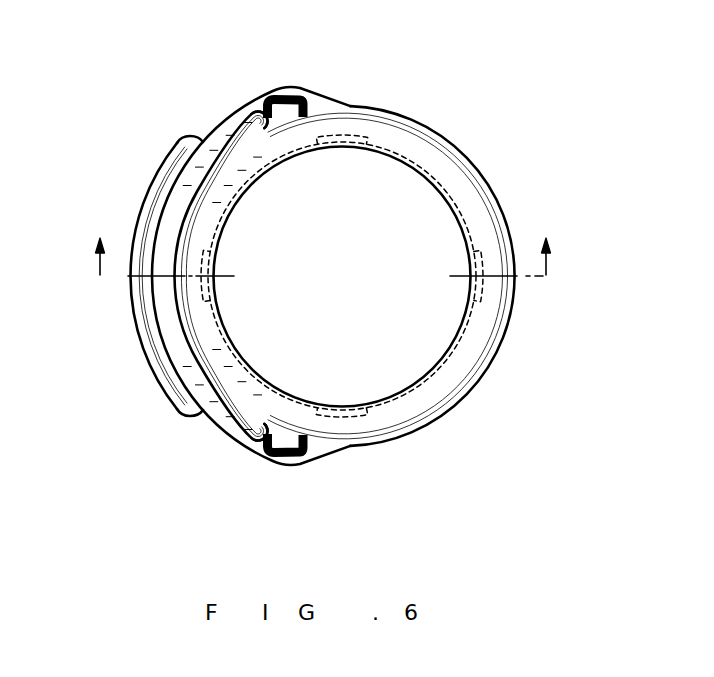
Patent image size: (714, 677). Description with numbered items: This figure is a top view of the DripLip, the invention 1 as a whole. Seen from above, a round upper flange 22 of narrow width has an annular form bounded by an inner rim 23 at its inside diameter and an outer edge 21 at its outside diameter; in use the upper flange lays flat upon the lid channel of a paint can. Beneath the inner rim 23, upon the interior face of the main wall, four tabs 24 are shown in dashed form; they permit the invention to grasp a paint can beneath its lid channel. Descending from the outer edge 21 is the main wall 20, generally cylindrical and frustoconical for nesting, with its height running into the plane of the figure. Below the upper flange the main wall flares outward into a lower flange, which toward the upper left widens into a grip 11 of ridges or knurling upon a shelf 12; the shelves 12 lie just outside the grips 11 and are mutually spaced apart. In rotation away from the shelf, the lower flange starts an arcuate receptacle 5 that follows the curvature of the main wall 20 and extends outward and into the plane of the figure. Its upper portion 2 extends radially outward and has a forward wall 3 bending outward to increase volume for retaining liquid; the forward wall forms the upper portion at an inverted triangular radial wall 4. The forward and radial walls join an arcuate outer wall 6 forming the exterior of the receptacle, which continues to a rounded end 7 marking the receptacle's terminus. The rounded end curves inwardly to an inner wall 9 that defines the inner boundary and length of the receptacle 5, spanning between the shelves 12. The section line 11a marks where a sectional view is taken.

The invention 1 is at (126, 130).
The upper portion 2 is at (178, 163).
The forward wall 3 is at (142, 323).
The radial wall 4 is at (183, 407).
The receptacle 5 is at (252, 122).
The outer wall 6 is at (213, 427).
The rounded end 7 is at (253, 431).
The inner wall 9 is at (182, 223).
The grip 11 is at (297, 93).
The section line 11a is at (325, 242).
The shelf 12 is at (259, 89).
The main wall 20 is at (495, 332).
The outer edge 21 is at (388, 414).
The upper flange 22 is at (470, 205).
The inner rim 23 is at (432, 370).
The tabs 24 is at (347, 140).